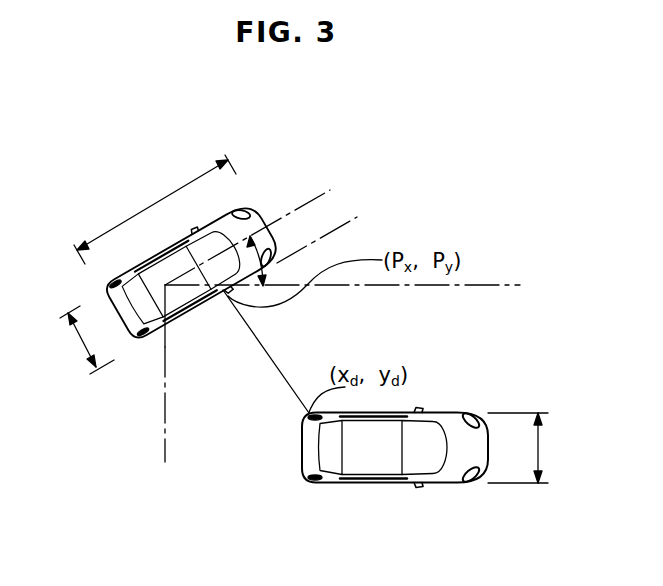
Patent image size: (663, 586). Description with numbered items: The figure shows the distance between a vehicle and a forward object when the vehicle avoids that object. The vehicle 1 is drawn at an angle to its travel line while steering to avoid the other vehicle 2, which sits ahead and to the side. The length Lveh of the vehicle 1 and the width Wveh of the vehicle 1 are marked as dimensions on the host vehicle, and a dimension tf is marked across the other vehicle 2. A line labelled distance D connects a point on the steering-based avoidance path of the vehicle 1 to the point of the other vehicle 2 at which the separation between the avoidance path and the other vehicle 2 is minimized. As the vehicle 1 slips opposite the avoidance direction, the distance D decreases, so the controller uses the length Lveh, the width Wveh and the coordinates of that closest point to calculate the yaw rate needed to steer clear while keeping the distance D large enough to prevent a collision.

The vehicle 1 is at (262, 208).
The other vehicle 2 is at (447, 477).
The distance D is at (266, 351).
The length of the vehicle Lveh is at (155, 209).
The width of the vehicle Wveh is at (76, 346).
The target vehicle width (track) tf is at (518, 448).